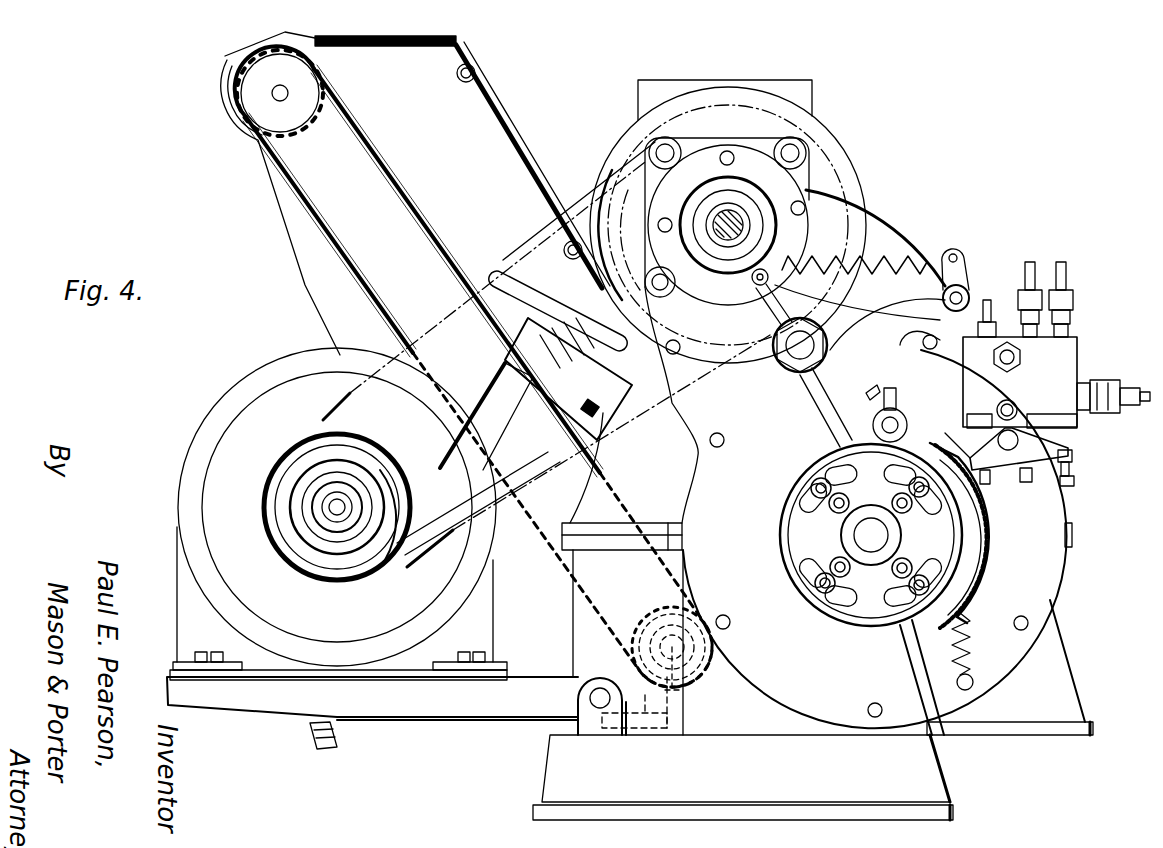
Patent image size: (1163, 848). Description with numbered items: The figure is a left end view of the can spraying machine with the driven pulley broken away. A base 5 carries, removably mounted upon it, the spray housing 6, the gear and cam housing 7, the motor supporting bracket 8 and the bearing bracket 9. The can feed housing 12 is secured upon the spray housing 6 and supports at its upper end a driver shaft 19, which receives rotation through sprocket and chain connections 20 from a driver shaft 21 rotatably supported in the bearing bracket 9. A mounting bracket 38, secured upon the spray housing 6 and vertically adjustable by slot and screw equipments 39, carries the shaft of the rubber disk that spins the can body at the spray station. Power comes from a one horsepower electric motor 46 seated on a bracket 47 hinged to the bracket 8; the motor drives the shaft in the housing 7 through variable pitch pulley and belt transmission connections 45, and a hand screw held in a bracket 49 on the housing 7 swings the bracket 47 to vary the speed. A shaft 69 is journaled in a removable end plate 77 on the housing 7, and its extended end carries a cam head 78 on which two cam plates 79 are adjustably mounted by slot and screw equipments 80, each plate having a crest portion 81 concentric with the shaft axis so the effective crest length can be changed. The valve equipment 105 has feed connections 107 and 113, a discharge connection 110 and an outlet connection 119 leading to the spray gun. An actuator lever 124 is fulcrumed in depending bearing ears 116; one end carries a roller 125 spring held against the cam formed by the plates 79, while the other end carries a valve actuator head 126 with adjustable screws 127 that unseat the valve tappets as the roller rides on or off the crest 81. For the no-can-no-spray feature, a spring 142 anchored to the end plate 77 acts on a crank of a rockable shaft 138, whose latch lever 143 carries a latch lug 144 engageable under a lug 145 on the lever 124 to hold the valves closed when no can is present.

The base 5 is at (743, 777).
The spray housing 6 is at (1010, 629).
The gear and cam housing 7 is at (583, 637).
The motor supporting bracket 8 is at (572, 728).
The bearing bracket 9 is at (687, 718).
The can feed housing 12 is at (426, 251).
The driver shaft 19 is at (289, 93).
The sprocket and chain connections 20 is at (330, 237).
The driver shaft 21 is at (650, 603).
The mounting bracket 38 is at (767, 140).
The slot and screw equipments 39 is at (803, 170).
The variable pitch pulley and belt transmission connections 45 is at (347, 402).
The electric motor 46 is at (203, 424).
The motor bracket 47 is at (372, 713).
The bracket 49 is at (500, 356).
The shaft 69 is at (873, 560).
The end plate 77 is at (883, 233).
The cam head 78 is at (847, 533).
The cam plates 79 is at (820, 464).
The slot and screw equipments 80 is at (807, 510).
The crest portion 81 is at (975, 540).
The valve equipment 105 is at (1078, 357).
The connection 107 is at (1046, 306).
The discharge connection 110 is at (1098, 406).
The connection 113 is at (1066, 288).
The bearing ears 116 is at (1074, 456).
The outlet connection 119 is at (985, 317).
The actuator lever 124 is at (946, 432).
The roller 125 is at (898, 420).
The valve actuator head 126 is at (1027, 462).
The adjustable screws 127 is at (1067, 478).
The shaft 138 is at (962, 288).
The spring 142 is at (820, 254).
The latch lever 143 is at (880, 332).
The latch lug 144 is at (815, 352).
The lug 145 is at (892, 390).